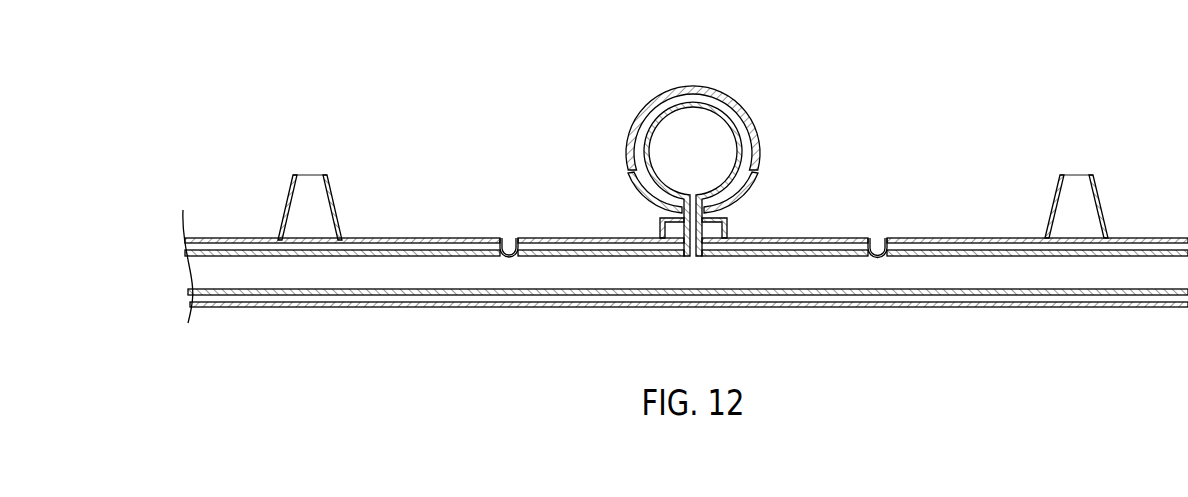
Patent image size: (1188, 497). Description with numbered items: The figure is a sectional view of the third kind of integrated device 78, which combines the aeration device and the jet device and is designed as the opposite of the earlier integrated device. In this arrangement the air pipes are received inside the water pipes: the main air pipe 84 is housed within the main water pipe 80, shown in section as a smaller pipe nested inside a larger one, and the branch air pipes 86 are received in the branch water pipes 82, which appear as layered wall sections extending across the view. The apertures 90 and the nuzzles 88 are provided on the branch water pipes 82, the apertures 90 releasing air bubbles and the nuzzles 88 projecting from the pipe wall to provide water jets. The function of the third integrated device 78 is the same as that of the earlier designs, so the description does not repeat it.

The integrated device 78 is at (661, 211).
The main water pipe 80 is at (700, 87).
The branch water pipes 82 is at (207, 238).
The main air pipe 84 is at (738, 138).
The branch air pipes 86 is at (394, 296).
The nuzzles 88 is at (333, 198).
The apertures 90 is at (510, 237).